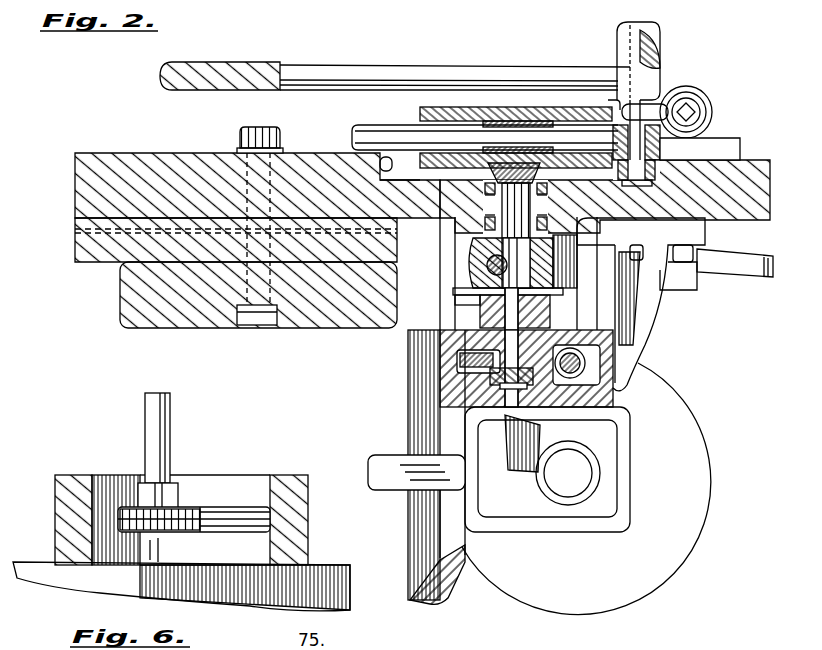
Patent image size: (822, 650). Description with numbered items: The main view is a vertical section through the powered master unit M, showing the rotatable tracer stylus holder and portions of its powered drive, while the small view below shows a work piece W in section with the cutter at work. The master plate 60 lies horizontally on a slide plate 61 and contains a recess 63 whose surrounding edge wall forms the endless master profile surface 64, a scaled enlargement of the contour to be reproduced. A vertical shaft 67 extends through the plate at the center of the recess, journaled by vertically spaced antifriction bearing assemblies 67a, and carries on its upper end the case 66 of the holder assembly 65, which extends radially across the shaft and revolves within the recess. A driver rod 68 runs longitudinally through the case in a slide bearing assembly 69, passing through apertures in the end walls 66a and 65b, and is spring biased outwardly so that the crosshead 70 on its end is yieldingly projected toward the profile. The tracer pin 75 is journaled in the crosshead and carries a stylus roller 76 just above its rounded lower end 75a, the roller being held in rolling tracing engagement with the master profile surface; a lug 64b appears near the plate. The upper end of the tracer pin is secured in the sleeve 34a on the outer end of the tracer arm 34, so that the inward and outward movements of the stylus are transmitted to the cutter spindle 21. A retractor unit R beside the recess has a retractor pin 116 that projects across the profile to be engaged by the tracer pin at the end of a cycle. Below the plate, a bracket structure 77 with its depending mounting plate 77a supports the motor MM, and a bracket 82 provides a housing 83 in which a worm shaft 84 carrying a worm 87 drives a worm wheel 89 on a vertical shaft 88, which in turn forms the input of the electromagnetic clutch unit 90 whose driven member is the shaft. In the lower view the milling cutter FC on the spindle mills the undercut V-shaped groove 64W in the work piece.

In FIG. 2, the powered master unit M is at (415, 203).
In FIG. 2, the master plate 60 is at (163, 163).
In FIG. 2, the slide plate 61 is at (97, 250).
In FIG. 2, the master profile surface 64 is at (661, 192).
In FIG. 2, the tracer arm 34 is at (363, 75).
In FIG. 2, the sleeve 34a is at (627, 52).
In FIG. 2, the retractor pin 116 is at (652, 108).
In FIG. 2, the retractor unit R is at (718, 113).
In FIG. 2, the holder assembly 65 is at (408, 108).
In FIG. 2, the end wall 65b is at (598, 104).
In FIG. 2, the case 66 is at (436, 120).
In FIG. 2, the end wall 66a is at (405, 172).
In FIG. 2, the driver rod 68 is at (463, 137).
In FIG. 2, the bearing assembly 69 is at (514, 124).
In FIG. 2, the recess 63 is at (362, 162).
In FIG. 2, the plate lug 64b is at (380, 163).
In FIG. 2, the shaft 67 is at (510, 218).
In FIG. 2, the antifriction bearing assemblies 67a is at (507, 185).
In FIG. 2, the electromagnetic clutch unit 90 is at (450, 274).
In FIG. 2, the tracer pin 75 is at (662, 151).
In FIG. 2, the lower end 75a is at (657, 227).
In FIG. 2, the stylus roller 76 is at (630, 198).
In FIG. 2, the crosshead 70 is at (660, 140).
In FIG. 2, the bracket 82 is at (638, 329).
In FIG. 2, the housing 83 is at (438, 330).
In FIG. 2, the worm shaft 84 is at (455, 371).
In FIG. 2, the worm 87 is at (565, 380).
In FIG. 2, the shaft 88 is at (508, 408).
In FIG. 2, the worm wheel 89 is at (484, 368).
In FIG. 2, the motor MM is at (627, 578).
In FIG. 2, the bracket structure 77 is at (412, 390).
In FIG. 2, the mounting plate 77a is at (456, 547).
In FIG. 6, the work piece W is at (296, 471).
In FIG. 6, the cutter spindle 21 is at (152, 445).
In FIG. 6, the undercut profile milled contour 64W is at (258, 508).
In FIG. 6, the milling cutter FC is at (197, 531).